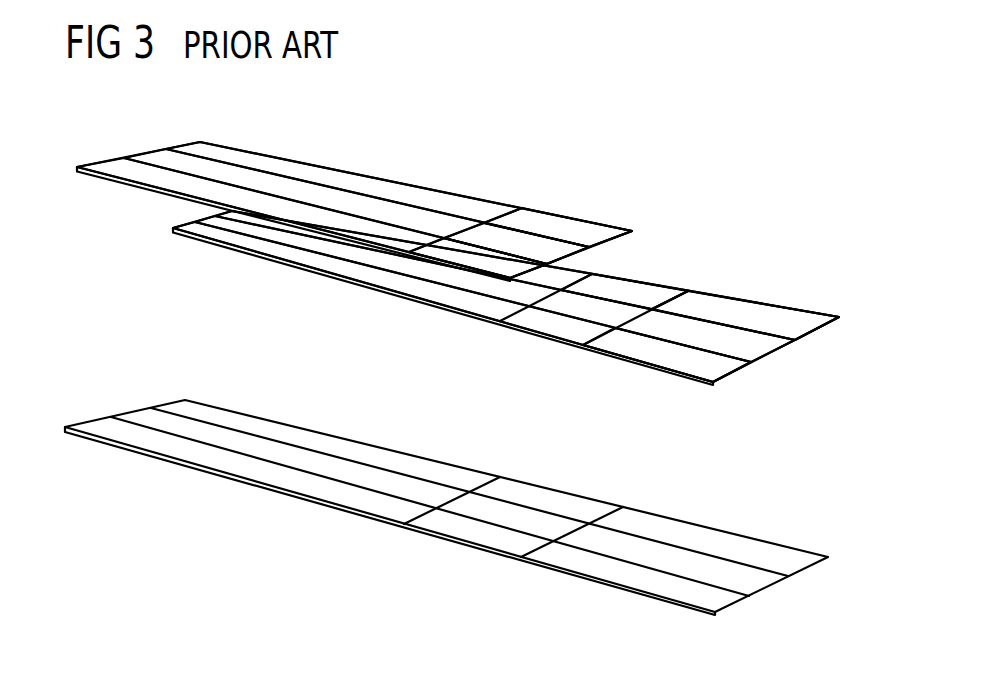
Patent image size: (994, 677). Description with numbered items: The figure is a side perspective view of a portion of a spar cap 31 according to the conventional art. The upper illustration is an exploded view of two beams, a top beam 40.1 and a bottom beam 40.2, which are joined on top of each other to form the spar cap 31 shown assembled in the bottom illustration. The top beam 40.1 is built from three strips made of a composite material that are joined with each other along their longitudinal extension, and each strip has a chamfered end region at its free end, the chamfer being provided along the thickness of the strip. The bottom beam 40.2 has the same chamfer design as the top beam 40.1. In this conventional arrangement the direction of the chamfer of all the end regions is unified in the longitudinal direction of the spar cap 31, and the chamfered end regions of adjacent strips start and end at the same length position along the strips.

The spar cap 31 is at (800, 518).
The top beam 40.1 is at (354, 180).
The bottom beam 40.2 is at (530, 298).